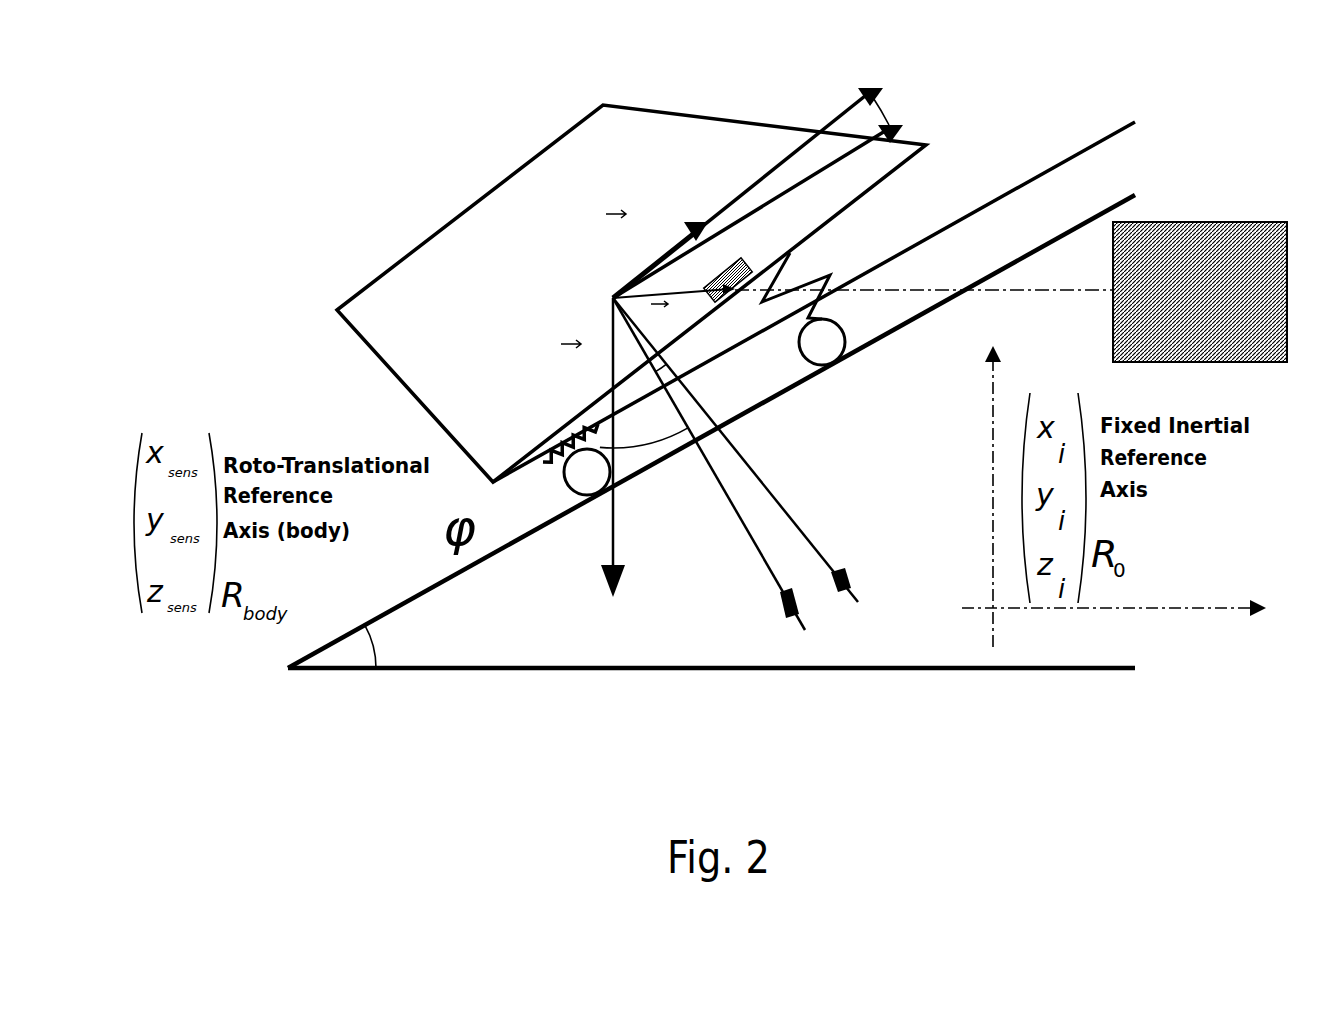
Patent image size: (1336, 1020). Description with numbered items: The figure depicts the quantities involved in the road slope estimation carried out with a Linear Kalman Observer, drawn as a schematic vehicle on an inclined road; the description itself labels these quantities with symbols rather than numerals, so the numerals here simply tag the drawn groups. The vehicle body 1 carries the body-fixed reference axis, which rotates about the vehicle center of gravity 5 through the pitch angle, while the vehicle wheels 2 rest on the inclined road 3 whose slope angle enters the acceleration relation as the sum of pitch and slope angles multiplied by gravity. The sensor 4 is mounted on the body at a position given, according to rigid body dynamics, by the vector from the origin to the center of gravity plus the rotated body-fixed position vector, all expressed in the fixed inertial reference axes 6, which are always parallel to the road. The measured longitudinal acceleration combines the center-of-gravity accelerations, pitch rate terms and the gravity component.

The vehicle body with suspension springs 1 is at (736, 293).
The wheels 2 is at (704, 405).
The inclined road surface and ground 3 is at (711, 433).
The inertial sensor mounted on body 4 is at (950, 291).
The center of gravity G with body and sensor axes 5 is at (739, 340).
The fixed inertial reference axes 6 is at (1104, 496).